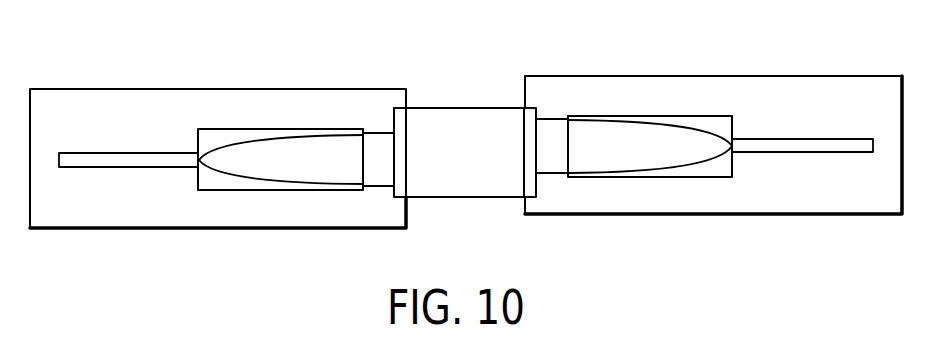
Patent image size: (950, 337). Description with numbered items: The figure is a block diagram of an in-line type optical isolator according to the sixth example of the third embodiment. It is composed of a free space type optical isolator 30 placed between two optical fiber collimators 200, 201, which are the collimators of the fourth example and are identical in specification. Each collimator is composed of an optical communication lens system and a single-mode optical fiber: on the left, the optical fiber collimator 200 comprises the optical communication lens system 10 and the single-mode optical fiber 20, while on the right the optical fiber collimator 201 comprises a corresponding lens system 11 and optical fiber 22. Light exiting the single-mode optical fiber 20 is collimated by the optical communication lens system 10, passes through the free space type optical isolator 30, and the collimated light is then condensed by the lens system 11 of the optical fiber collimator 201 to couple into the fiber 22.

The optical fiber collimator 200 is at (105, 88).
The optical fiber collimator 201 is at (641, 76).
The single-mode optical fiber 20 is at (95, 153).
The second optical fiber 22 is at (815, 139).
The optical communication lens system 10 is at (245, 128).
The second lens 11 is at (628, 115).
The free space type optical isolator 30 is at (473, 107).